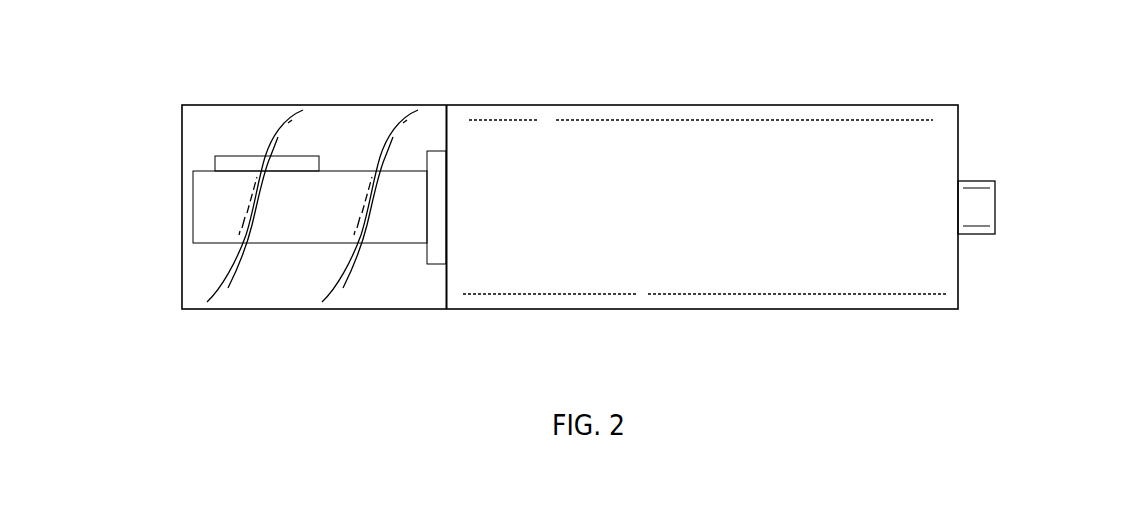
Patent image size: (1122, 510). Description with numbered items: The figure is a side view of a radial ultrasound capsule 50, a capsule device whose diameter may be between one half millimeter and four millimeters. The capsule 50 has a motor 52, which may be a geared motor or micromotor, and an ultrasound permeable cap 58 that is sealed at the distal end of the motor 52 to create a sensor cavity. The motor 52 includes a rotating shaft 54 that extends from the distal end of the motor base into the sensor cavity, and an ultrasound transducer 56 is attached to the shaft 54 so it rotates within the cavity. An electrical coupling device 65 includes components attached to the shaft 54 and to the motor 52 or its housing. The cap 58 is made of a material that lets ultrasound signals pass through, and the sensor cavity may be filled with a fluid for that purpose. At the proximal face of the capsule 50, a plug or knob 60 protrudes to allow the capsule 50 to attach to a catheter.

The radial ultrasound capsule 50 is at (950, 60).
The motor 52 is at (740, 105).
The rotating shaft 54 is at (213, 245).
The ultrasound transducer 56 is at (260, 157).
The ultrasound permeable cap 58 is at (297, 310).
The plug or knob 60 is at (995, 207).
The electrical coupling device 65 is at (437, 151).